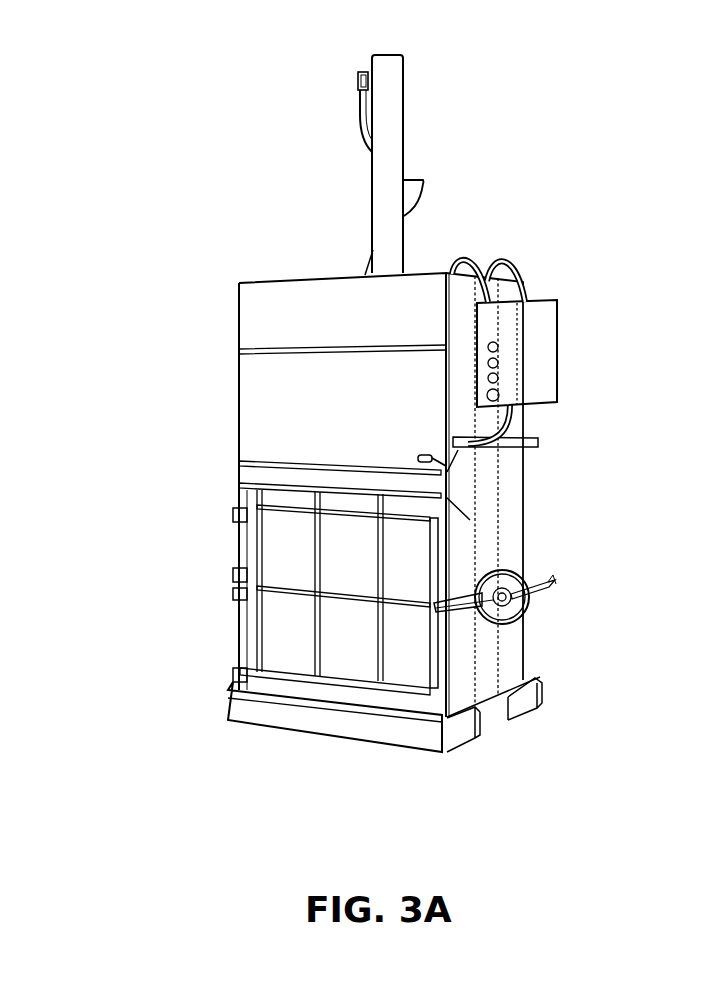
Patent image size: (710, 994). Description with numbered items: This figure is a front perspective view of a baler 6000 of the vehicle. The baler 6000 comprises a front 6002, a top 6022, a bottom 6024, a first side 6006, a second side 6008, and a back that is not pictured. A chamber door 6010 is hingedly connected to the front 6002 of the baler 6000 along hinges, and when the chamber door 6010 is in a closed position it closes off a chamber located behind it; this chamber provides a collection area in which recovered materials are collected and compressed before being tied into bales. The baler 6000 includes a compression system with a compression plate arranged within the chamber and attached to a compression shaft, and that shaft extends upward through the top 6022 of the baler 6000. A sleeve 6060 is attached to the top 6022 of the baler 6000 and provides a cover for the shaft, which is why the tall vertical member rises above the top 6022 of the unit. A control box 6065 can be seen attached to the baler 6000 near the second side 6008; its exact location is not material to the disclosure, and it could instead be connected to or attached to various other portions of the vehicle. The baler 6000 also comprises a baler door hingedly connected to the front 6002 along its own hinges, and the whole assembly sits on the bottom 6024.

The baler 6000 is at (639, 229).
The sleeve 6060 is at (404, 137).
The top 6022 is at (288, 281).
The second side 6008 is at (523, 537).
The control box 6065 is at (558, 350).
The chamber door 6010 is at (388, 447).
The first side 6006 is at (232, 518).
The front 6002 is at (355, 657).
The bottom 6024 is at (402, 745).